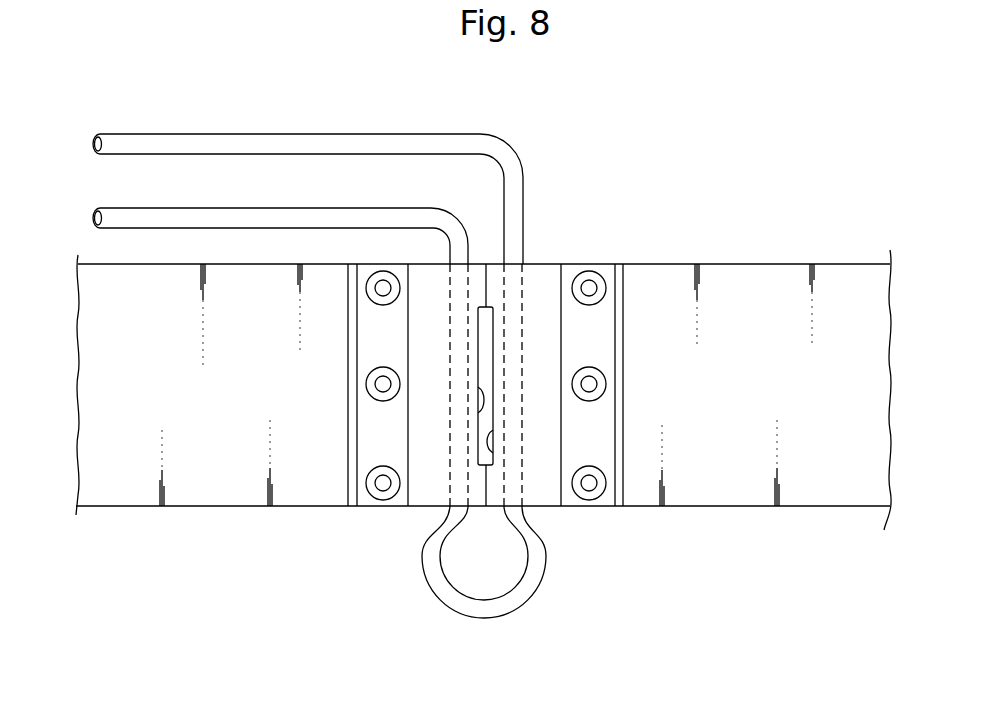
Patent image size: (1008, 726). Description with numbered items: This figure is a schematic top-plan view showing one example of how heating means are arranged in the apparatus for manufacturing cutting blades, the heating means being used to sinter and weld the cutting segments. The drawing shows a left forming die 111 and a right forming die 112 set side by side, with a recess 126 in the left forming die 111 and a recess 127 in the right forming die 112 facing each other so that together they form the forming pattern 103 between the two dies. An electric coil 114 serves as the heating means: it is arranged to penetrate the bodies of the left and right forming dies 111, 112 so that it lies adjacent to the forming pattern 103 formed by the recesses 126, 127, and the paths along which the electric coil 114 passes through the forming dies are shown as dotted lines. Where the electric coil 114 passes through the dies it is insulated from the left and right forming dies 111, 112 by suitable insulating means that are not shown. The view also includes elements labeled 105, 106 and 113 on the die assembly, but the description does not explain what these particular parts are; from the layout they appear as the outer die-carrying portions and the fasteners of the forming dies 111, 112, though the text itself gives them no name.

The forming pattern 103 is at (485, 322).
The first panel 105 is at (215, 492).
The second panel 106 is at (750, 498).
The left forming die 111 is at (463, 372).
The right forming die 112 is at (546, 273).
The screw 113 is at (597, 278).
The electric coil 114 is at (460, 143).
The recess of left forming die 126 is at (478, 413).
The recess of right forming die 127 is at (492, 448).